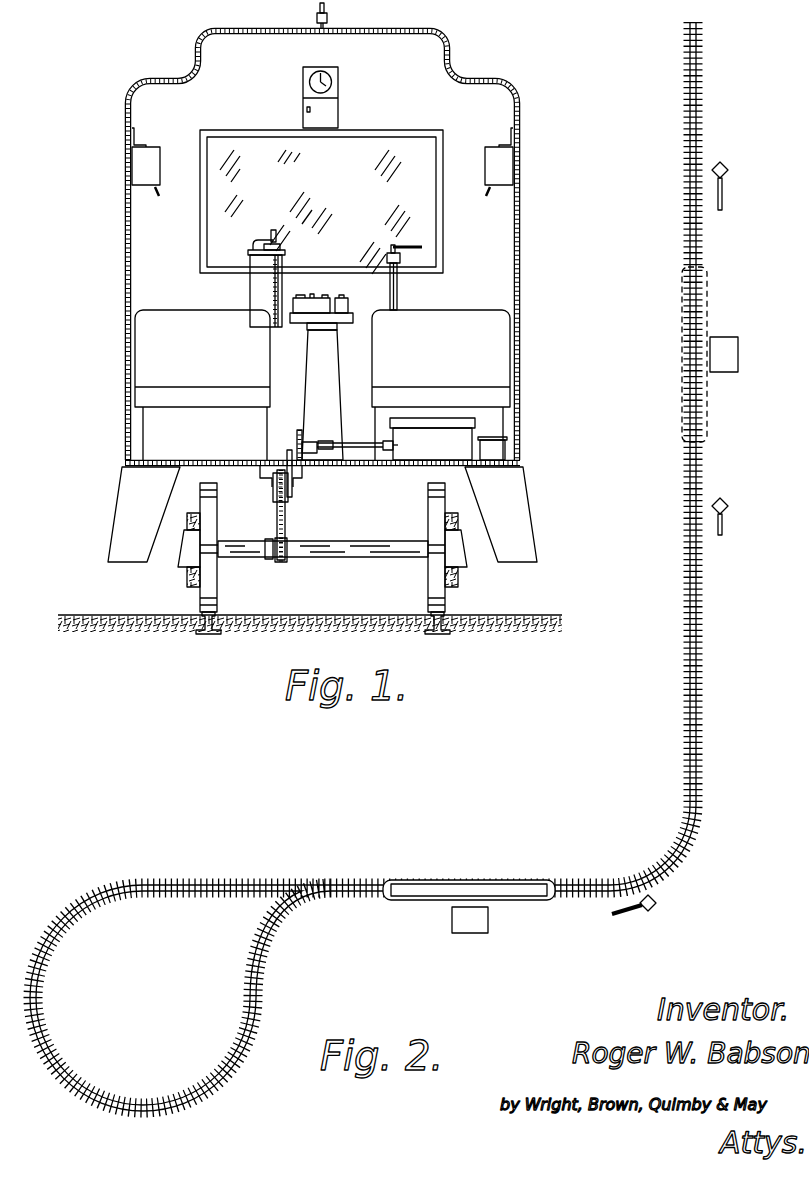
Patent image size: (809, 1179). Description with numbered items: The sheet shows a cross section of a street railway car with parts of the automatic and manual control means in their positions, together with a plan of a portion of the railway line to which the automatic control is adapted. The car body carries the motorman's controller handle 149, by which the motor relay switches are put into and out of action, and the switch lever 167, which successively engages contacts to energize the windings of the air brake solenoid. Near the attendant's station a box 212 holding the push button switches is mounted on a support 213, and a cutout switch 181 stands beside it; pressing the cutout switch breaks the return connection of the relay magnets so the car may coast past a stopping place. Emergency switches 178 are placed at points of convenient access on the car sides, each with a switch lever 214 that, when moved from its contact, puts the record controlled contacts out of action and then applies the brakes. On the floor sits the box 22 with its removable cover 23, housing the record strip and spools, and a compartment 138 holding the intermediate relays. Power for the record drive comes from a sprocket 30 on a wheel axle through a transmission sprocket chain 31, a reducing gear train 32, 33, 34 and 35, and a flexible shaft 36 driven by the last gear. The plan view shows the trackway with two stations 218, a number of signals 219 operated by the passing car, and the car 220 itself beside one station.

In FIG. 1, the emergency switch 178 is at (140, 168).
In FIG. 1, the switch lever 214 is at (327, 204).
In FIG. 1, the controller handle 149 is at (266, 241).
In FIG. 1, the switch lever 167 is at (405, 240).
In FIG. 1, the cutout switch 181 is at (345, 308).
In FIG. 1, the box 212 is at (307, 308).
In FIG. 1, the support 213 is at (322, 378).
In FIG. 1, the removable cover 23 is at (452, 418).
In FIG. 1, the box 22 is at (432, 447).
In FIG. 1, the compartment 138 is at (498, 453).
In FIG. 1, the reducing gear 35 is at (299, 430).
In FIG. 1, the flexible shaft 36 is at (346, 440).
In FIG. 1, the reducing gear 33 is at (285, 447).
In FIG. 1, the reducing gear 34 is at (300, 478).
In FIG. 1, the reducing gear 32 is at (290, 500).
In FIG. 1, the transmission sprocket chain 31 is at (277, 520).
In FIG. 1, the sprocket 30 is at (283, 562).
In FIG. 2, the signal 219 is at (723, 183).
In FIG. 2, the station 218 is at (735, 355).
In FIG. 2, the car 220 is at (470, 882).